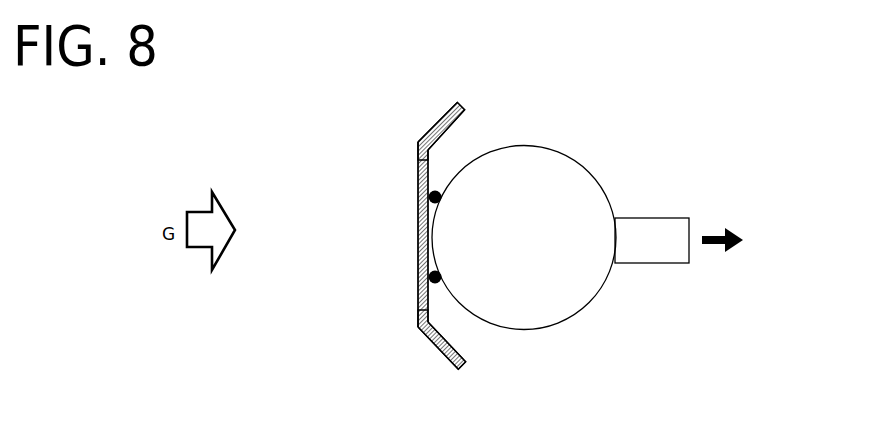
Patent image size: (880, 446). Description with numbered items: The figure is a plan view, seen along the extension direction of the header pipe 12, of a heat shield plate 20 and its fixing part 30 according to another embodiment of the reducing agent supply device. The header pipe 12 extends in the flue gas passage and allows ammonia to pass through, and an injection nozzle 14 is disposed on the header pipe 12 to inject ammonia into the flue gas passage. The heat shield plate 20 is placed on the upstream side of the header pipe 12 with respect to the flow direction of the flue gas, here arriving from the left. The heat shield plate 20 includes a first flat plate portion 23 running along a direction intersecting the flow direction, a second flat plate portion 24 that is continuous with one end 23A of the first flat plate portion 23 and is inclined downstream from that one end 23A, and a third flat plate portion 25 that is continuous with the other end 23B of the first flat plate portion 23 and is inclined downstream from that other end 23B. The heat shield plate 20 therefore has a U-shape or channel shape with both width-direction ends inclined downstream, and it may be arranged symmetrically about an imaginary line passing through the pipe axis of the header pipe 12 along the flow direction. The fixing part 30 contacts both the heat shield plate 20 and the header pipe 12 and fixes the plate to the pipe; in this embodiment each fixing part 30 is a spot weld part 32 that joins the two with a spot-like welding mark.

The header pipe 12 is at (595, 178).
The injection nozzle 14 is at (647, 263).
The heat shield plate 20 is at (318, 97).
The first flat plate portion 23 is at (418, 236).
The one end of the first flat plate portion 23A is at (418, 148).
The other end of the first flat plate portion 23B is at (418, 325).
The second flat plate portion 24 is at (440, 120).
The third flat plate portion 25 is at (437, 347).
The fixing part 30 is at (491, 242).
The spot weld part 32 is at (440, 190).